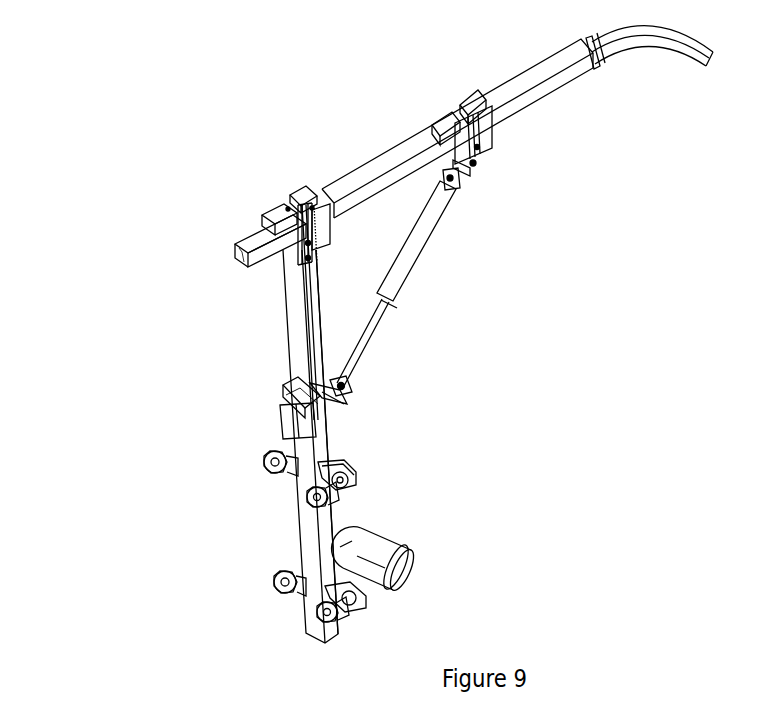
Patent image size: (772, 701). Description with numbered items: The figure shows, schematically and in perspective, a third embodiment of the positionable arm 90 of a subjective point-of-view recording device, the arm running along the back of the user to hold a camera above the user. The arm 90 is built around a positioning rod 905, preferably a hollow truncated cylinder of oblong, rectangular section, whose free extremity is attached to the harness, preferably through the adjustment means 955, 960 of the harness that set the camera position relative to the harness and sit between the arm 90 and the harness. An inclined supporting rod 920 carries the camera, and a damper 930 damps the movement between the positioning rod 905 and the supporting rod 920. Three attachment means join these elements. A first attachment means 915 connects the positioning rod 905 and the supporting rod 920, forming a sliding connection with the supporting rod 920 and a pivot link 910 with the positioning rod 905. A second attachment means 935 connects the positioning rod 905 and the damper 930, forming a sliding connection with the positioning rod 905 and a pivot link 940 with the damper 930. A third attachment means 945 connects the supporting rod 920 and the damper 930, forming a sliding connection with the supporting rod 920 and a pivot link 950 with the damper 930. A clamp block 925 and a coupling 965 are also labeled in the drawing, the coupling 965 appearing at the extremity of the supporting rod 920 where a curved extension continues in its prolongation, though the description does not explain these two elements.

The positionable arm 90 is at (364, 74).
The positioning rod 905 is at (293, 317).
The pivot link 910 is at (312, 257).
The first attachment means 915 is at (282, 257).
The supporting rod 920 is at (385, 160).
The upper clamp 925 is at (288, 203).
The damper 930 is at (413, 247).
The second attachment means 935 is at (282, 417).
The pivot link 940 is at (338, 384).
The third attachment means 945 is at (495, 127).
The pivot link 950 is at (648, 42).
The adjustment means 955 is at (350, 468).
The adjustment means 960 is at (373, 553).
The sleeve coupling 965 is at (602, 60).